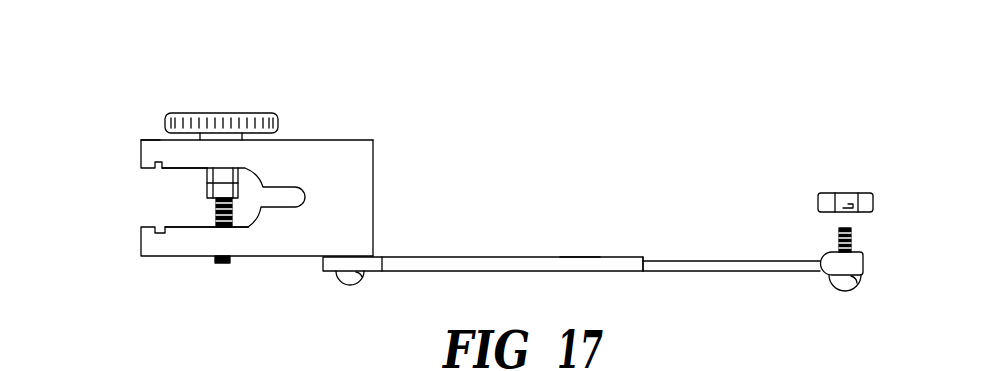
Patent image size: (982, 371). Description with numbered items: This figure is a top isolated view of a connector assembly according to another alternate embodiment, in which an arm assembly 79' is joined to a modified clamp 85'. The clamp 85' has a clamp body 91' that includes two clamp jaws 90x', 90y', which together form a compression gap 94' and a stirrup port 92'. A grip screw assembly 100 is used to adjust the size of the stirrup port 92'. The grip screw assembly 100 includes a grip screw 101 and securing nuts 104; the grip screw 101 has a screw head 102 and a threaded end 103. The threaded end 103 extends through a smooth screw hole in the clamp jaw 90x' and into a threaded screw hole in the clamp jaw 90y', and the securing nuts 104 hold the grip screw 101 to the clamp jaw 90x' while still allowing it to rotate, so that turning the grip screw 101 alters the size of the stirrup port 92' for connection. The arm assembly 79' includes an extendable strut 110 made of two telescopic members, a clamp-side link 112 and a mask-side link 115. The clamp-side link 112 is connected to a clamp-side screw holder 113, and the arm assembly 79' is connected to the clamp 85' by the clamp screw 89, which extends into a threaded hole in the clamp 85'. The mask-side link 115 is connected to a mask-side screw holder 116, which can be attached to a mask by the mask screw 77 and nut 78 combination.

The clamp jaw 90x' is at (231, 119).
The clamp jaw 90y' is at (229, 259).
The clamp body 91' is at (326, 223).
The clamp 85' is at (141, 92).
The compression gap 94' is at (184, 167).
The stirrup port 92' is at (173, 199).
The securing nuts 104 is at (240, 193).
The threaded end 103 is at (222, 263).
The grip screw assembly 100 is at (293, 124).
The grip screw 101 is at (190, 120).
The screw head 102 is at (237, 122).
The clamp-side link 112 is at (497, 262).
The clamp-side screw holder 113 is at (374, 263).
The clamp screw 89 is at (342, 281).
The arm assembly 79' is at (588, 213).
The extendable strut 110 is at (609, 253).
The mask-side link 115 is at (718, 263).
The mask-side screw holder 116 is at (852, 265).
The mask screw 77 is at (856, 237).
The mask nut 78 is at (848, 193).